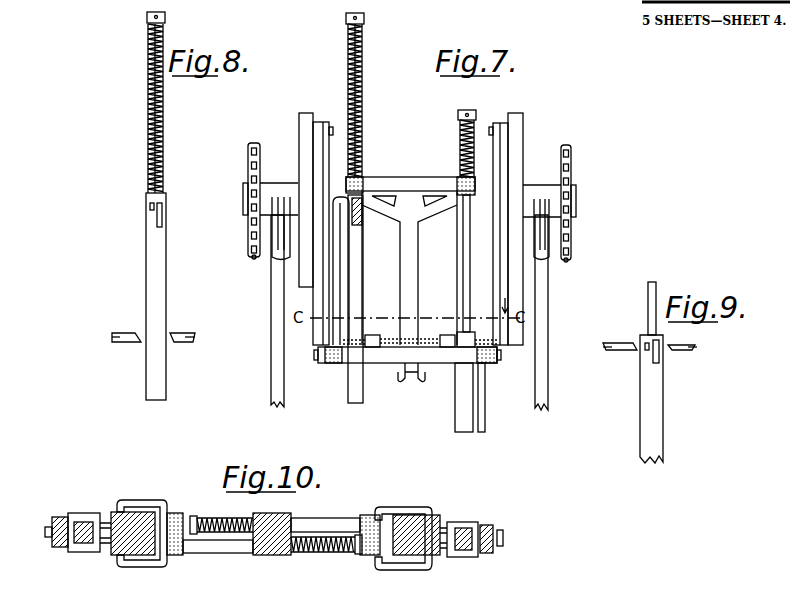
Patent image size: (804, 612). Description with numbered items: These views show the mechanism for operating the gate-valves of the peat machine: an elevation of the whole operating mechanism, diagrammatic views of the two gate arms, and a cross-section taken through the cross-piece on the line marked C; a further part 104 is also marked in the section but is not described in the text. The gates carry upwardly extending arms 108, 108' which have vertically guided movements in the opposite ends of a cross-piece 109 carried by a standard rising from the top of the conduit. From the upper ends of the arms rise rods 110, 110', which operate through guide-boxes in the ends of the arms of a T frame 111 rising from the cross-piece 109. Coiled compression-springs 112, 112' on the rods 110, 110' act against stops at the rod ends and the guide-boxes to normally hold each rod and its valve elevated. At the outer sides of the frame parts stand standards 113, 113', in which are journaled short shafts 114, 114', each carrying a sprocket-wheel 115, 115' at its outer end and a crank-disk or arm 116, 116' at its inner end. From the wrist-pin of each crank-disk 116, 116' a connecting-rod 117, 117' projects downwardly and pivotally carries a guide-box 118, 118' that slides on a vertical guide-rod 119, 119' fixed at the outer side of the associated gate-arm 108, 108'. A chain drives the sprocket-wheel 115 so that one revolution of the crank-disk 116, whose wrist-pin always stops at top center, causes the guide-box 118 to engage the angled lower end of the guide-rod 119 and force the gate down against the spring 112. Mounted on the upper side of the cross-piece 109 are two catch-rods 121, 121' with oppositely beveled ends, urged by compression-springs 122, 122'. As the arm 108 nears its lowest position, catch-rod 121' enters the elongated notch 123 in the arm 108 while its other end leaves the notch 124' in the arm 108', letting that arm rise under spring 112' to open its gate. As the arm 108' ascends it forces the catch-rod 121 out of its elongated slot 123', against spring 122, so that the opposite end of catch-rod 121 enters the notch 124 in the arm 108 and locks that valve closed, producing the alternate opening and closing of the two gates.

In FIG. 8, the arm 108 is at (133, 296).
In FIG. 7, the arm 108 is at (373, 299).
In FIG. 10, the arm 108 is at (133, 558).
In FIG. 7, the arm 108' is at (446, 400).
In FIG. 9, the arm 108' is at (672, 399).
In FIG. 10, the arm 108' is at (418, 513).
In FIG. 7, the cross-piece 109 is at (438, 363).
In FIG. 10, the cross-piece 109 is at (142, 500).
In FIG. 8, the rod 110 is at (130, 108).
In FIG. 7, the rod 110 is at (373, 108).
In FIG. 7, the rod 110' is at (451, 262).
In FIG. 9, the rod 110' is at (628, 308).
In FIG. 7, the T frame 111 is at (404, 228).
In FIG. 10, the T frame 111 is at (270, 555).
In FIG. 8, the coiled compression-spring 112 is at (171, 102).
In FIG. 7, the coiled compression-spring 112 is at (374, 95).
In FIG. 7, the coiled compression-spring 112' is at (449, 144).
In FIG. 7, the standard 113 is at (258, 311).
In FIG. 7, the standard 113' is at (564, 312).
In FIG. 7, the short shaft 114 is at (255, 201).
In FIG. 7, the short shaft 114' is at (573, 202).
In FIG. 7, the sprocket-wheel 115 is at (234, 253).
In FIG. 7, the sprocket-wheel 115' is at (593, 245).
In FIG. 7, the crank-disk 116 is at (297, 229).
In FIG. 7, the crank-disk 116' is at (533, 229).
In FIG. 7, the connecting-rod 117 is at (393, 349).
In FIG. 10, the connecting-rod 117 is at (56, 516).
In FIG. 7, the connecting-rod 117' is at (512, 340).
In FIG. 10, the connecting-rod 117' is at (509, 545).
In FIG. 7, the guide-box 118 is at (330, 370).
In FIG. 10, the guide-box 118 is at (69, 547).
In FIG. 7, the guide-box 118' is at (504, 368).
In FIG. 10, the guide-box 118' is at (465, 554).
In FIG. 7, the guide-rod 119 is at (365, 271).
In FIG. 10, the guide-rod 119 is at (80, 553).
In FIG. 7, the guide-rod 119' is at (503, 397).
In FIG. 10, the guide-rod 119' is at (477, 518).
In FIG. 8, the catch-rod 121 is at (118, 349).
In FIG. 9, the catch-rod 121 is at (704, 347).
In FIG. 10, the catch-rod 121 is at (218, 566).
In FIG. 8, the catch-rod 121' is at (189, 349).
In FIG. 9, the catch-rod 121' is at (617, 335).
In FIG. 10, the catch-rod 121' is at (331, 501).
In FIG. 7, the compression-spring 122 is at (420, 341).
In FIG. 10, the compression-spring 122 is at (326, 564).
In FIG. 10, the compression-spring 122' is at (220, 509).
In FIG. 8, the elongated notch 123 is at (178, 209).
In FIG. 9, the elongated slot 123' is at (678, 362).
In FIG. 8, the notch 124 is at (131, 216).
In FIG. 9, the notch 124' is at (624, 365).
In FIG. 10, the shaft 104 is at (394, 601).